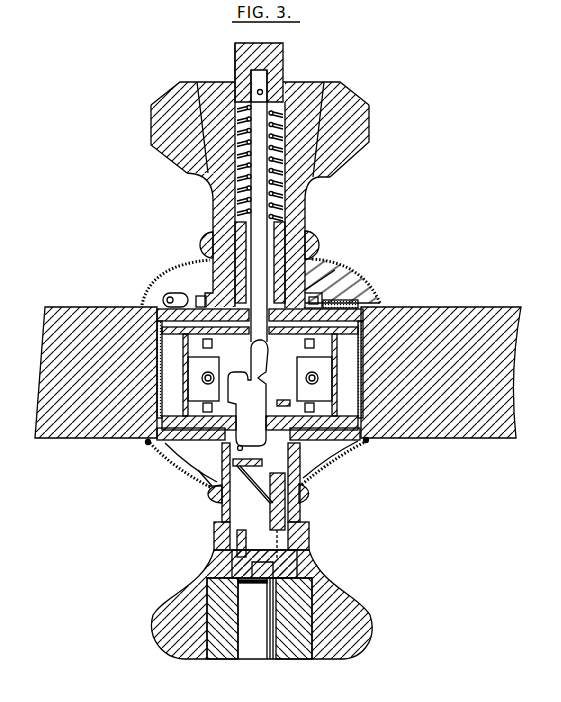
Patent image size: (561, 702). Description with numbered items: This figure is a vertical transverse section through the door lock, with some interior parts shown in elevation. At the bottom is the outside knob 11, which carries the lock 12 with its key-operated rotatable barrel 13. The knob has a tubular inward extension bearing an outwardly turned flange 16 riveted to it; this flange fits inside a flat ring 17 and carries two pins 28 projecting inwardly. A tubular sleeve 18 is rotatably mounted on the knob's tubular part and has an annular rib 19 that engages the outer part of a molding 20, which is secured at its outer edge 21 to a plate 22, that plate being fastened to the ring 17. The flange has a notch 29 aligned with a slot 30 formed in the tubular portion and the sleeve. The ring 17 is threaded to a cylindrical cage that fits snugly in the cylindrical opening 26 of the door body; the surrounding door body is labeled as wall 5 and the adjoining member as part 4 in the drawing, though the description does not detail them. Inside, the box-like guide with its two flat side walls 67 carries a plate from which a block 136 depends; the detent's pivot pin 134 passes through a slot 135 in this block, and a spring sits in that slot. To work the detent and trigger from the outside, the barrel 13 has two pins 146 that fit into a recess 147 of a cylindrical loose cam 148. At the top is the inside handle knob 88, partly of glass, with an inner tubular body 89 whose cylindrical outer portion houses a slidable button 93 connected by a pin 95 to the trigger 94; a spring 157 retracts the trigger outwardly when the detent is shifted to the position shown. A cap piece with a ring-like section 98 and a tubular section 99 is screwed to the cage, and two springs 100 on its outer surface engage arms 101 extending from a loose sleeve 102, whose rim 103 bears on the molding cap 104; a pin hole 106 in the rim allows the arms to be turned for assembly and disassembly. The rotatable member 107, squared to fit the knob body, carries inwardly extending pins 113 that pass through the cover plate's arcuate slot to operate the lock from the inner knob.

The slidable button 93 is at (272, 57).
The pin 95 is at (262, 91).
The handle knob 88 is at (369, 120).
The inner tubular body 89 is at (210, 150).
The spring 157 is at (280, 150).
The trigger 94 is at (260, 208).
The rotatable member 107 is at (227, 283).
The rim 103 is at (308, 239).
The pin hole 106 is at (316, 250).
The loose sleeve 102 is at (308, 268).
The arms 101 is at (317, 287).
The springs 100 is at (323, 305).
The tubular section 99 is at (347, 277).
The ring-like section 98 is at (378, 303).
The molding cap 104 is at (142, 303).
The outwardly turned flange 16 is at (182, 273).
The wall 5 is at (119, 333).
The cylindrical opening 26 is at (157, 397).
The pins 28 is at (362, 398).
The flat side walls 67 is at (185, 362).
The pins 113 is at (238, 396).
The plate 4 is at (119, 423).
The outer edge 21 is at (155, 446).
The molding 20 is at (170, 468).
The notch 29 is at (198, 470).
The slot 30 is at (213, 488).
The slot 135 is at (208, 495).
The annular rib 19 is at (223, 508).
The block 136 is at (298, 434).
The recess 147 is at (225, 543).
The pivot pin 134 is at (240, 452).
The plate 22 is at (352, 440).
The flat ring 17 is at (333, 449).
The tubular sleeve 18 is at (310, 486).
The loose cam 148 is at (275, 519).
The pins 146 is at (243, 538).
The outside knob 11 is at (172, 631).
The lock 12 is at (223, 654).
The rotatable barrel 13 is at (263, 652).